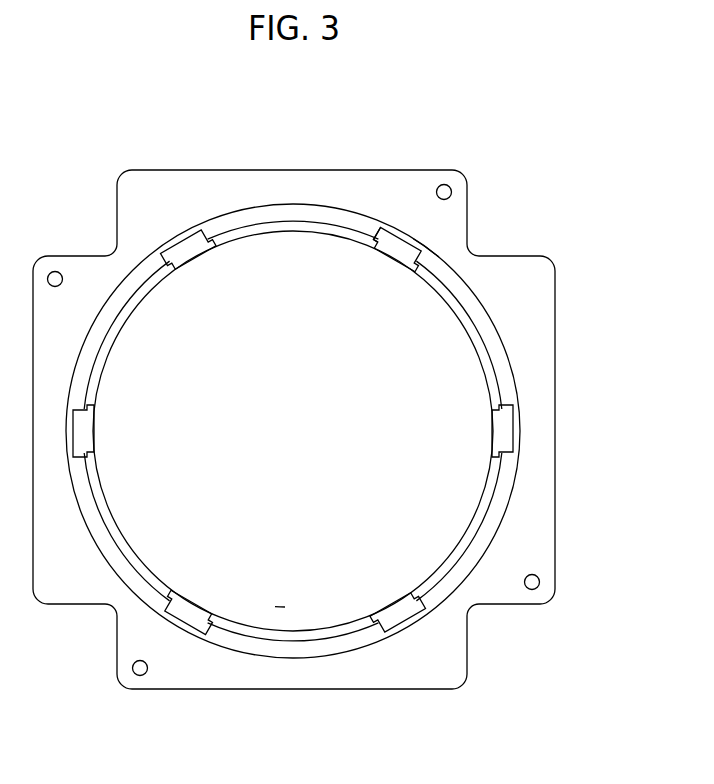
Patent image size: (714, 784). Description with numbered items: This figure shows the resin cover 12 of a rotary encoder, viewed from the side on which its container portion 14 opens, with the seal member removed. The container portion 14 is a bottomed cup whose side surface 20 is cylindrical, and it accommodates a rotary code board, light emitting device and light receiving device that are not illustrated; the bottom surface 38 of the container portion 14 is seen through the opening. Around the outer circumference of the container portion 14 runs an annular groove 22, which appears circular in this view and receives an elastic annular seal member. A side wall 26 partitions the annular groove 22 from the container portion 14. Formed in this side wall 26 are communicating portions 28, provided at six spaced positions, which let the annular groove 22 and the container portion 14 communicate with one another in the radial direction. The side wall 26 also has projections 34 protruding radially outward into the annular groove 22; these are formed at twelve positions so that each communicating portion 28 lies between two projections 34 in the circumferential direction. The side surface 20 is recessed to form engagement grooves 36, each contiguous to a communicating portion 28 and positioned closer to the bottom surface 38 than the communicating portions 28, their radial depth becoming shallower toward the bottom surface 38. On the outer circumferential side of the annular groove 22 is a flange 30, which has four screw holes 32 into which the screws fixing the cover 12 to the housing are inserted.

The cover 12 is at (443, 143).
The container portion 14 is at (462, 407).
The side surface 20 is at (460, 322).
The annular groove 22 is at (303, 213).
The side wall 26 is at (487, 362).
The communicating portion 28 is at (390, 255).
The flange 30 is at (373, 675).
The screw hole 32 is at (140, 676).
The projection 34 is at (423, 247).
The engagement groove 36 is at (402, 255).
The bottom surface 38 is at (285, 607).